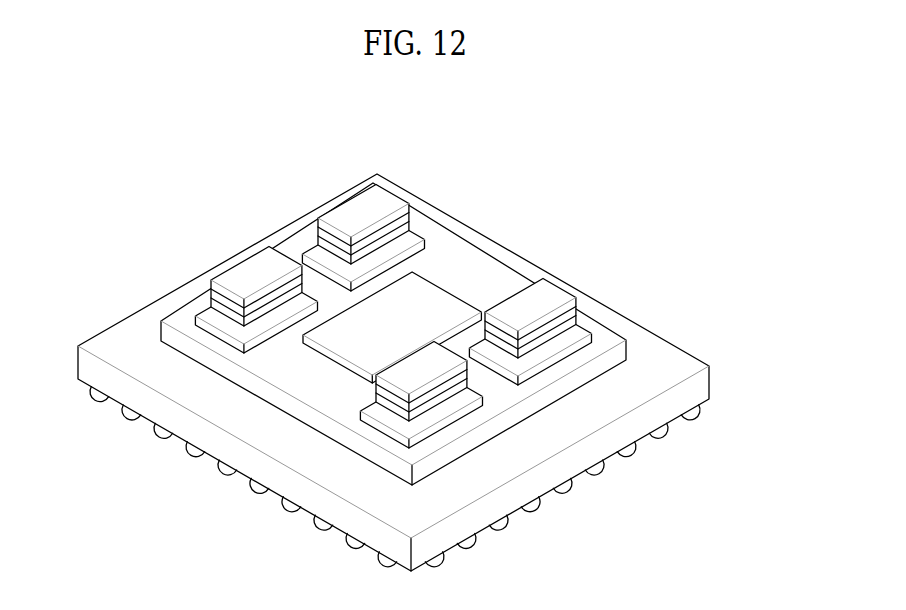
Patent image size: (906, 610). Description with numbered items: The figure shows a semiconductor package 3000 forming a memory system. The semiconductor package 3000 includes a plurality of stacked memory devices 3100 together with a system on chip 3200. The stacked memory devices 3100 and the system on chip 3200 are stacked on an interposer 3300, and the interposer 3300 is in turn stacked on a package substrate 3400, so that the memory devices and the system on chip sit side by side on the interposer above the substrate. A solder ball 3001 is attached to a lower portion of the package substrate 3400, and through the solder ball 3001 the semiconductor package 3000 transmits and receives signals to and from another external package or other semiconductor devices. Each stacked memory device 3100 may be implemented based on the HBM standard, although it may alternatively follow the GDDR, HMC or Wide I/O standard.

The semiconductor package 3000 is at (410, 105).
The stacked memory device 3100 is at (548, 295).
The system on chip 3200 is at (425, 288).
The interposer 3300 is at (487, 276).
The package substrate 3400 is at (665, 352).
The solder ball 3001 is at (657, 435).